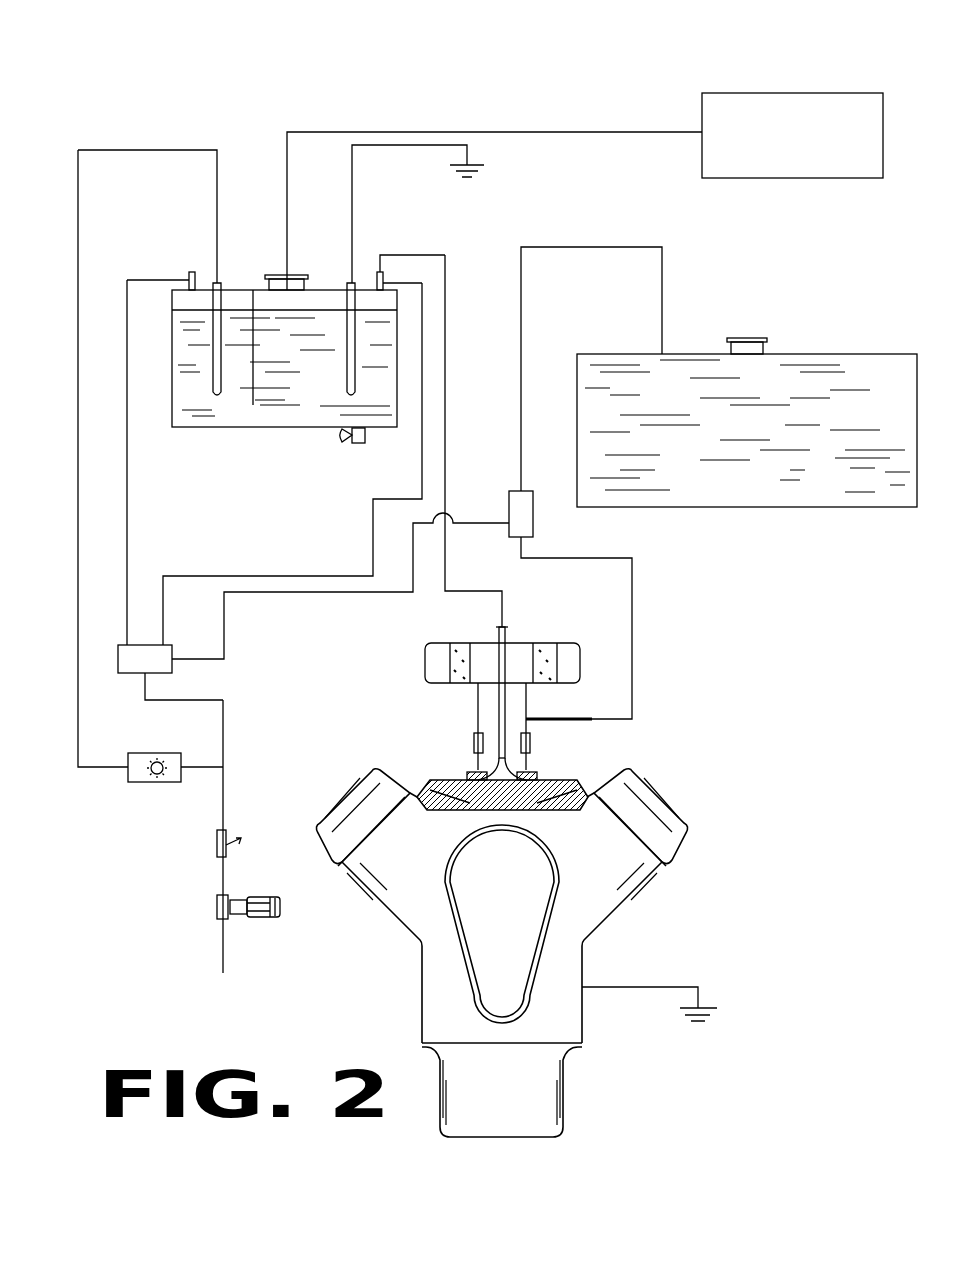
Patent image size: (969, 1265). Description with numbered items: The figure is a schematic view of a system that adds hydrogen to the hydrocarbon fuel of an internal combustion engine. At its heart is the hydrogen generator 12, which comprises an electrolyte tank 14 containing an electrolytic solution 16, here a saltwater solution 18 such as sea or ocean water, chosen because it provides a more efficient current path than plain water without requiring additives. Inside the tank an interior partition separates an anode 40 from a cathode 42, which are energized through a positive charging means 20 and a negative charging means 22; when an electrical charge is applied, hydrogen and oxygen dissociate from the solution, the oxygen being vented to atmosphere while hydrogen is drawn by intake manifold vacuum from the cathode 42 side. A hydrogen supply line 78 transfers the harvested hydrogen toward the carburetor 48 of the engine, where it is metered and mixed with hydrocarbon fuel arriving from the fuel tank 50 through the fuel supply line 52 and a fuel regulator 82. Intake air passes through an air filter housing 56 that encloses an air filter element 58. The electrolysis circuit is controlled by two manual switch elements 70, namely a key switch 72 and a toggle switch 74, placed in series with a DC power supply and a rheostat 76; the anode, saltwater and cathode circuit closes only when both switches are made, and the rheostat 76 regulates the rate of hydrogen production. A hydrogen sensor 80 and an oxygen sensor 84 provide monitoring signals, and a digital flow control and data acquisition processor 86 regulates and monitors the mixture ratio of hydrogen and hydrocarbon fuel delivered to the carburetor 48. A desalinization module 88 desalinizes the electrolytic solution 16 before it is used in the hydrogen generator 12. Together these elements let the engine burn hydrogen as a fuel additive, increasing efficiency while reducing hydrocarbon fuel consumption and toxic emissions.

The hydrogen generator 12 is at (356, 124).
The electrolyte tank 14 is at (293, 427).
The electrolytic solution 16 is at (177, 378).
The saltwater solution 18 is at (233, 388).
The positive charging means 20 is at (220, 282).
The negative charging means 22 is at (350, 282).
The anode 40 is at (216, 284).
The cathode 42 is at (278, 278).
The carburetor 48 is at (473, 748).
The fuel tank 50 is at (617, 352).
The fuel supply line 52 is at (583, 247).
The air filter housing 56 is at (577, 645).
The air filter element 58 is at (460, 655).
The manual switch element 70 is at (217, 903).
The key switch 72 is at (238, 916).
The toggle switch 74 is at (226, 832).
The rheostat 76 is at (138, 752).
The hydrogen supply line 78 is at (447, 255).
The hydrogen sensor 80 is at (384, 281).
The fuel regulator 82 is at (535, 515).
The oxygen sensor 84 is at (189, 280).
The digital flow control and data acquisition processor 86 is at (150, 645).
The desalinization module 88 is at (770, 148).